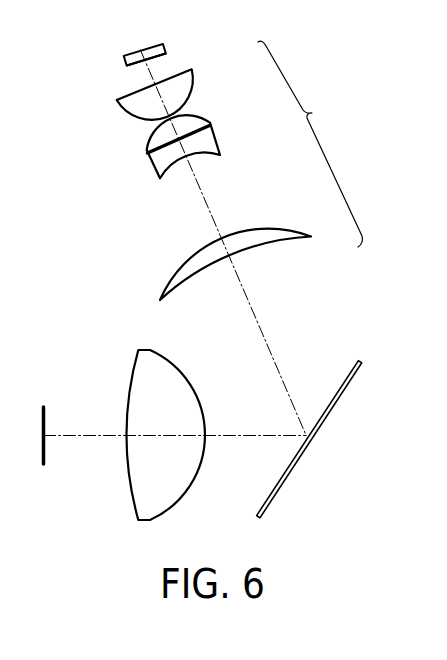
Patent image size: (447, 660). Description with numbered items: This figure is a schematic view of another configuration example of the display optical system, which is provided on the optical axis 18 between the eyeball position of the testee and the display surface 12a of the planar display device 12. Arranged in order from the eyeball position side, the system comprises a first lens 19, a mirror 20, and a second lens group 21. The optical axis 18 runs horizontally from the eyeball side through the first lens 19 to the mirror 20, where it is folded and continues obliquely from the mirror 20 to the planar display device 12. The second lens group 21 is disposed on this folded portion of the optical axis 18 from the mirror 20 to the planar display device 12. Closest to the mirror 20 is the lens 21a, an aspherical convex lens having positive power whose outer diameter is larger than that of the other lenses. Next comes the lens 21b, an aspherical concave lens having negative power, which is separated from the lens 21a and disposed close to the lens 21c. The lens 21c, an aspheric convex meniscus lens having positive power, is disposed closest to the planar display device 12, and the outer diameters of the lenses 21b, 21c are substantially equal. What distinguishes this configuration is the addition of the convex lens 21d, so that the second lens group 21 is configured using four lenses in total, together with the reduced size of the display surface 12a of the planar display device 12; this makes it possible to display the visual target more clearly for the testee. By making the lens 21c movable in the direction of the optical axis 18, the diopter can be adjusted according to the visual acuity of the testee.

The planar display device 12 is at (125, 60).
The display surface 12a is at (137, 70).
The optical axis 18 is at (272, 360).
The first lens 19 is at (170, 367).
The mirror 20 is at (272, 490).
The second lens group 21 is at (310, 144).
The lens 21a is at (282, 263).
The lens 21b is at (220, 157).
The lens 21c is at (191, 80).
The lens 21d is at (202, 110).